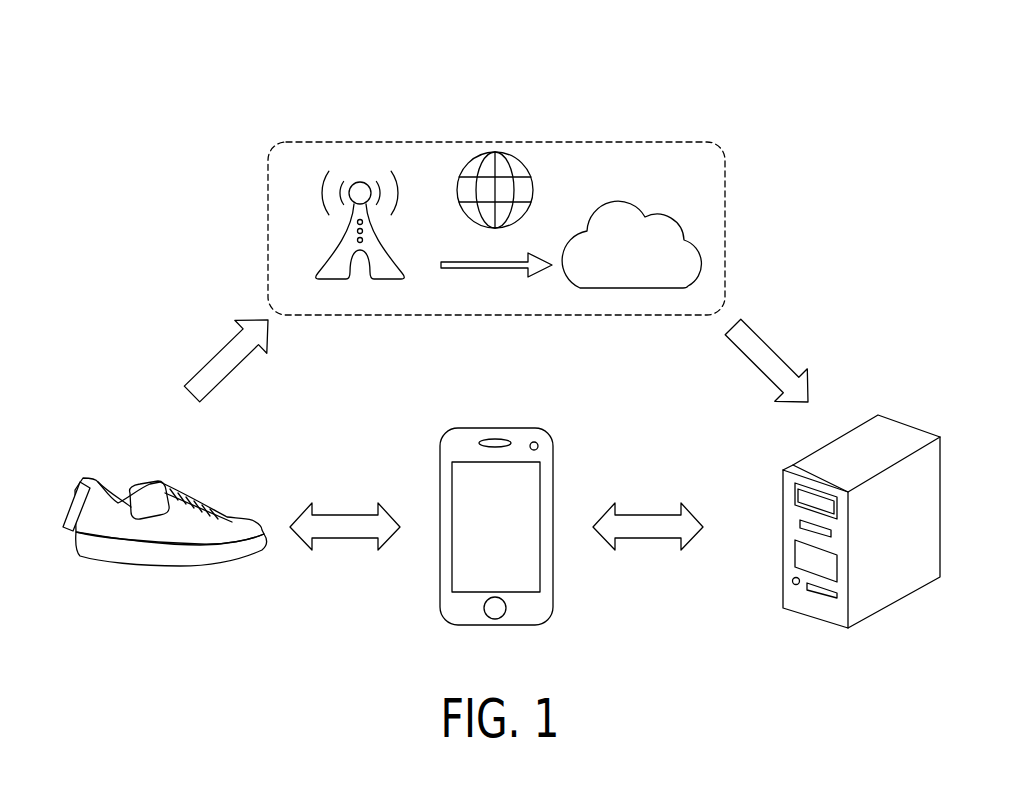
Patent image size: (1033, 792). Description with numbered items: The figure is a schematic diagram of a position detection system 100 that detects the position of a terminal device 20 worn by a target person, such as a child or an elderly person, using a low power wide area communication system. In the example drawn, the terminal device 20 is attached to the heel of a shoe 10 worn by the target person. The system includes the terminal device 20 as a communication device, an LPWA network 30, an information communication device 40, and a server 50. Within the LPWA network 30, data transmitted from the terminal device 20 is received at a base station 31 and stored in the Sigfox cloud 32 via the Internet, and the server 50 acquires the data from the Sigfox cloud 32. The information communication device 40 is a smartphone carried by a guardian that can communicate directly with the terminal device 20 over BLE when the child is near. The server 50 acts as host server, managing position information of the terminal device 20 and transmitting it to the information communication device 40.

The position detection system 100 is at (809, 60).
The shoe 10 is at (203, 508).
The terminal device 20 is at (77, 488).
The LPWA network 30 is at (568, 142).
The base station 31 is at (385, 280).
The Sigfox cloud 32 is at (630, 289).
The information communication device 40 is at (503, 427).
The server 50 is at (897, 428).